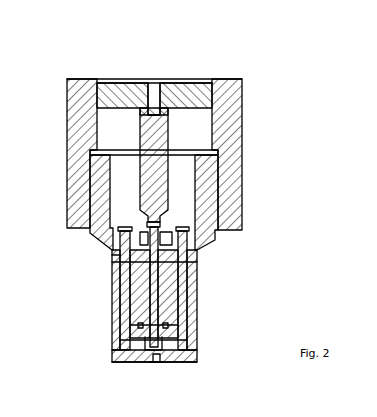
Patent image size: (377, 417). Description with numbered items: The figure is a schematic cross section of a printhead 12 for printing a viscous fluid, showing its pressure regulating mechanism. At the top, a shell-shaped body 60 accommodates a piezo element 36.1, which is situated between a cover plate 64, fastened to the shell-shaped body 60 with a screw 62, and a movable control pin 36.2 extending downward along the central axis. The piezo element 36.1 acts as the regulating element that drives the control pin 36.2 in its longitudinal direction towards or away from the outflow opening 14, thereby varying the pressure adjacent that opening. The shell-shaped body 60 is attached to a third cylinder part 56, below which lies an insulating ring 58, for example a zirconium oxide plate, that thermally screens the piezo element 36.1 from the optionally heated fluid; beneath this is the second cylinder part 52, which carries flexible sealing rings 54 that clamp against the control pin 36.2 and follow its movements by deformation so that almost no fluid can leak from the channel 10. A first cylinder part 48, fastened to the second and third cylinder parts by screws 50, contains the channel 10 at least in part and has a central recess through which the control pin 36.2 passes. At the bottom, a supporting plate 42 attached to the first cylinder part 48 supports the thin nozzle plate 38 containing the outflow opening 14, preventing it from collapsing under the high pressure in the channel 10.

The channel 10 is at (196, 350).
The printhead 12 is at (194, 62).
The outflow opening 14 is at (160, 364).
The piezo element 36.1 is at (170, 122).
The control pin 36.2 is at (190, 308).
The nozzle plate 38 is at (112, 353).
The supporting plate 42 is at (106, 362).
The first cylinder part 48 is at (112, 340).
The screws 50 is at (114, 300).
The second cylinder part 52 is at (113, 278).
The sealing rings 54 is at (168, 273).
The third cylinder part 56 is at (88, 190).
The insulating ring 58 is at (112, 260).
The shell-shaped body 60 is at (80, 131).
The screw 62 is at (153, 84).
The cover plate 64 is at (118, 81).